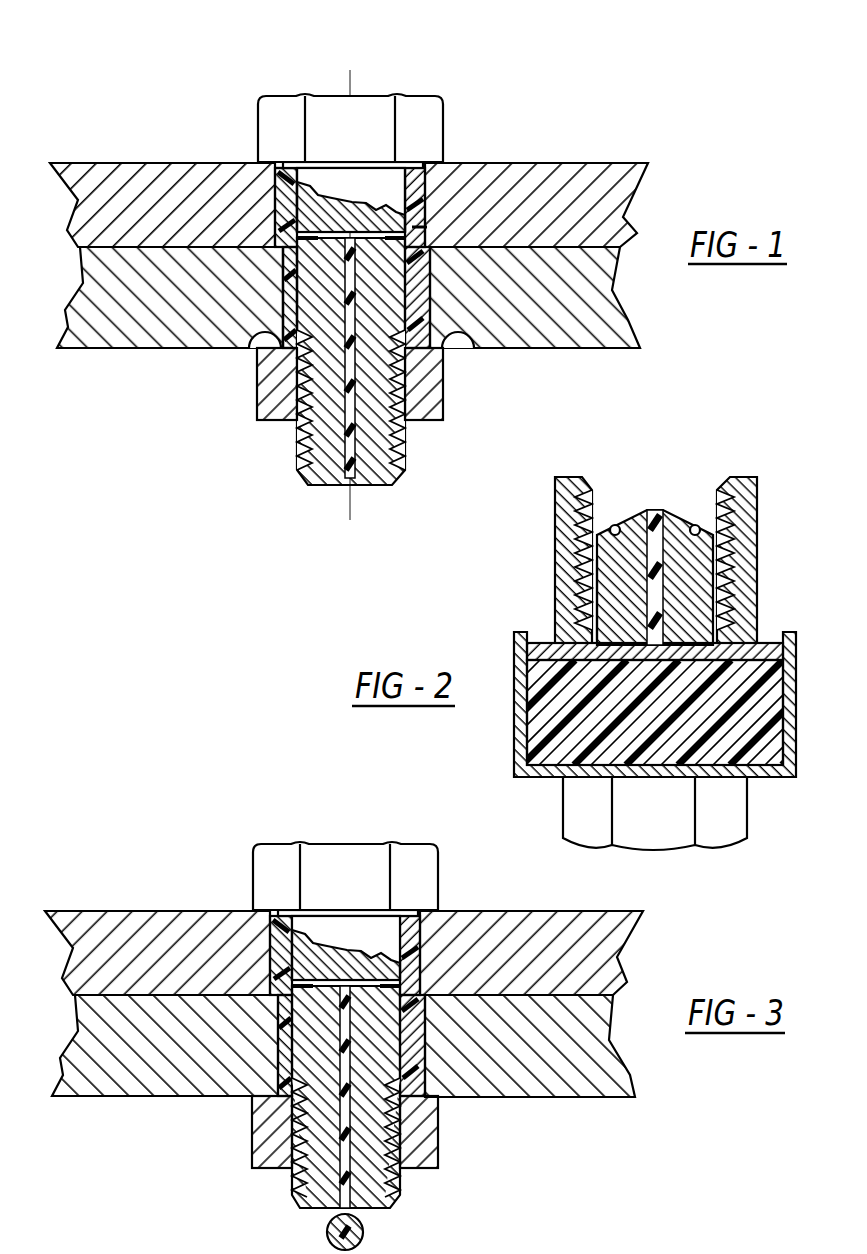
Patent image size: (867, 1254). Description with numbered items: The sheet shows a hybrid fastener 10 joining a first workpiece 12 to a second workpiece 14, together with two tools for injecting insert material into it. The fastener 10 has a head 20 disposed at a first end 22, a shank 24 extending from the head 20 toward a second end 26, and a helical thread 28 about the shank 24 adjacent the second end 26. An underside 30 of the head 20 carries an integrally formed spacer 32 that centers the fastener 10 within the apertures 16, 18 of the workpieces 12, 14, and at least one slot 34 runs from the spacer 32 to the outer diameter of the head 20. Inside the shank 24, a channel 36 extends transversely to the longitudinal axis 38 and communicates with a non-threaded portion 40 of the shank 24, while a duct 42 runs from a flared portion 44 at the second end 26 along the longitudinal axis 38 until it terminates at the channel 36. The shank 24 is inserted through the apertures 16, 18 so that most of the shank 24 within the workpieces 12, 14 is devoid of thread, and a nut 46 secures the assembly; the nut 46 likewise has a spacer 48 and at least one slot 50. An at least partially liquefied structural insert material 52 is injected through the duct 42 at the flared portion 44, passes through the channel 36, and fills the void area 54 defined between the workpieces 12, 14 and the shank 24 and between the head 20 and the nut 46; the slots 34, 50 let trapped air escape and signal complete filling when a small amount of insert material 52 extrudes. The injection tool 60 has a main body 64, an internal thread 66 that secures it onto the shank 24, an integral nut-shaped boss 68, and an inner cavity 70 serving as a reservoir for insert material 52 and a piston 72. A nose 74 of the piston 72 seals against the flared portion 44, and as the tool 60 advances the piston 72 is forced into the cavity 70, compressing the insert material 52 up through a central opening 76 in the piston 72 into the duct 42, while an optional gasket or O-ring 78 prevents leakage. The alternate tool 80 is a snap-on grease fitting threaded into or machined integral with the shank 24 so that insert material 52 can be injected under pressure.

In FIG. 1, the hybrid fastener 10 is at (191, 115).
In FIG. 3, the hybrid fastener 10 is at (345, 1002).
In FIG. 1, the first workpiece 12 is at (628, 225).
In FIG. 3, the first workpiece 12 is at (382, 953).
In FIG. 1, the second workpiece 14 is at (625, 333).
In FIG. 3, the second workpiece 14 is at (386, 1049).
In FIG. 1, the aperture 16 is at (415, 223).
In FIG. 1, the aperture 18 is at (430, 312).
In FIG. 1, the head 20 is at (435, 133).
In FIG. 1, the first end 22 is at (423, 295).
In FIG. 1, the shank 24 is at (293, 297).
In FIG. 3, the shank 24 is at (295, 1099).
In FIG. 1, the second end 26 is at (375, 377).
In FIG. 1, the helical thread 28 is at (400, 433).
In FIG. 1, the underside 30 is at (310, 175).
In FIG. 1, the spacer 32 is at (335, 177).
In FIG. 1, the slot 34 is at (440, 190).
In FIG. 1, the channel 36 is at (297, 192).
In FIG. 1, the longitudinal axis 38 is at (352, 82).
In FIG. 1, the non-threaded portion 40 is at (287, 262).
In FIG. 1, the duct 42 is at (340, 422).
In FIG. 1, the flared portion 44 is at (443, 408).
In FIG. 1, the nut 46 is at (257, 410).
In FIG. 1, the spacer 48 is at (256, 342).
In FIG. 1, the slot 50 is at (450, 345).
In FIG. 1, the structural insert material 52 is at (620, 222).
In FIG. 2, the structural insert material 52 is at (733, 722).
In FIG. 3, the structural insert material 52 is at (416, 1079).
In FIG. 1, the void area 54 is at (272, 182).
In FIG. 2, the tool 60 is at (782, 471).
In FIG. 2, the main body 64 is at (742, 527).
In FIG. 2, the internal thread 66 is at (722, 500).
In FIG. 2, the nut-shaped boss 68 is at (733, 812).
In FIG. 2, the inner cavity 70 is at (772, 688).
In FIG. 2, the piston 72 is at (549, 655).
In FIG. 2, the nose 74 is at (630, 522).
In FIG. 2, the central opening 76 is at (645, 590).
In FIG. 2, the gasket or O-ring 78 is at (696, 524).
In FIG. 3, the alternate tool 80 is at (418, 1228).